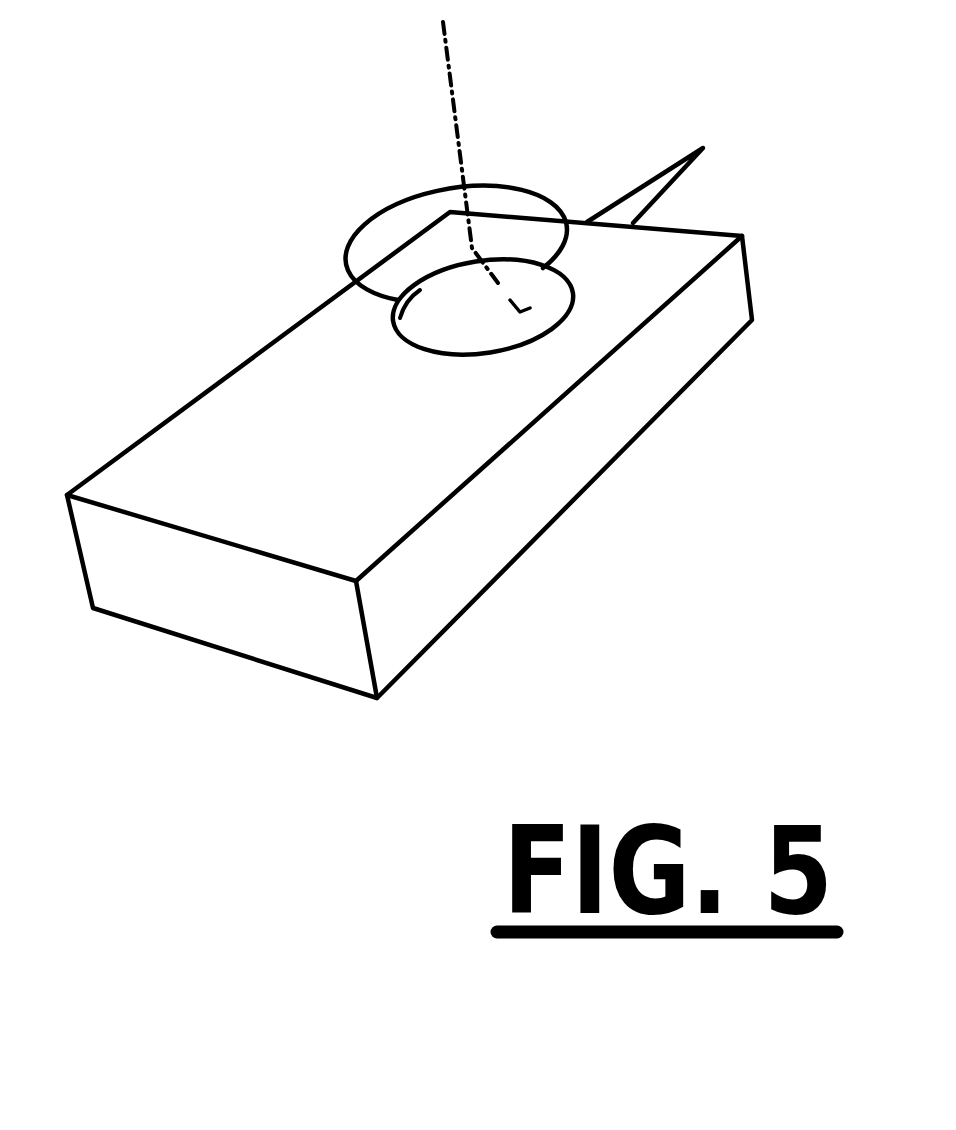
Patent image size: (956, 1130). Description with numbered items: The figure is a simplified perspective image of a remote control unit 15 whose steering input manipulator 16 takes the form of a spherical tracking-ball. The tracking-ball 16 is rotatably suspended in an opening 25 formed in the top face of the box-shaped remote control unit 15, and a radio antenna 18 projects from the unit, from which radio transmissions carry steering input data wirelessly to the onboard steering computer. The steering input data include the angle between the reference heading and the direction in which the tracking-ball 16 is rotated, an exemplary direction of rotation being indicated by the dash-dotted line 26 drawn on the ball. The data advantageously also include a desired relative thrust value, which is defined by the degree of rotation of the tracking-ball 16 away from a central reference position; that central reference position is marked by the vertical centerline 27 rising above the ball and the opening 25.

The remote control unit 15 is at (255, 440).
The steering input manipulator 16 is at (448, 285).
The radio antenna 18 is at (646, 192).
The opening 25 is at (378, 340).
The dash-dotted line 26 is at (517, 314).
The vertical centerline 27 is at (453, 90).